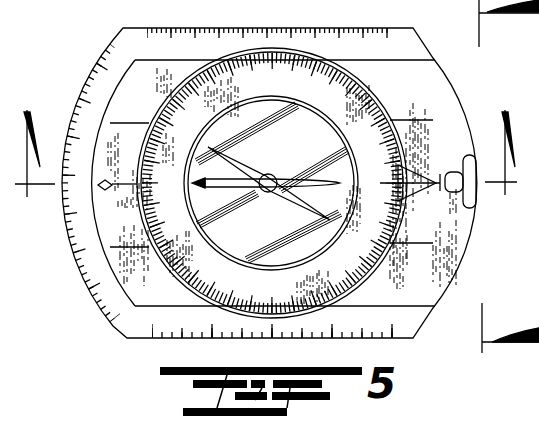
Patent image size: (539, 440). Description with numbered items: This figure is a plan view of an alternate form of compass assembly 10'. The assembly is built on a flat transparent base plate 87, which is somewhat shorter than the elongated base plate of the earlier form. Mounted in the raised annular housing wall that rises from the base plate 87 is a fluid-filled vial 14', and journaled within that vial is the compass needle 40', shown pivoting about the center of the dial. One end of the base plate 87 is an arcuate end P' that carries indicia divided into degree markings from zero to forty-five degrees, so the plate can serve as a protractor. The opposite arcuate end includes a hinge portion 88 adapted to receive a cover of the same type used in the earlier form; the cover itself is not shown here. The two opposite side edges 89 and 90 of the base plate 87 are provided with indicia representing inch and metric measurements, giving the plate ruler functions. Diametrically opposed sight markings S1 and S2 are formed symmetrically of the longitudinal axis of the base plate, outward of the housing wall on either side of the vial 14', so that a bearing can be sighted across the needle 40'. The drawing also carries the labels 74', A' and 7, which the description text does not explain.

The compass assembly 10' is at (259, 187).
The flat transparent base plate 87 is at (462, 262).
The arcuate end P' is at (71, 183).
The side edge 89 is at (197, 28).
The side edge 90 is at (210, 338).
The graduated bezel ring 74' is at (273, 183).
The fluid-filled vial 14' is at (284, 135).
The compass needle 40' is at (269, 175).
The magnetic needle A' is at (266, 201).
The sight marking S1 is at (113, 182).
The sight marking S2 is at (408, 167).
The hinge portion 88 is at (468, 192).
The section line 7- 7 is at (277, 176).